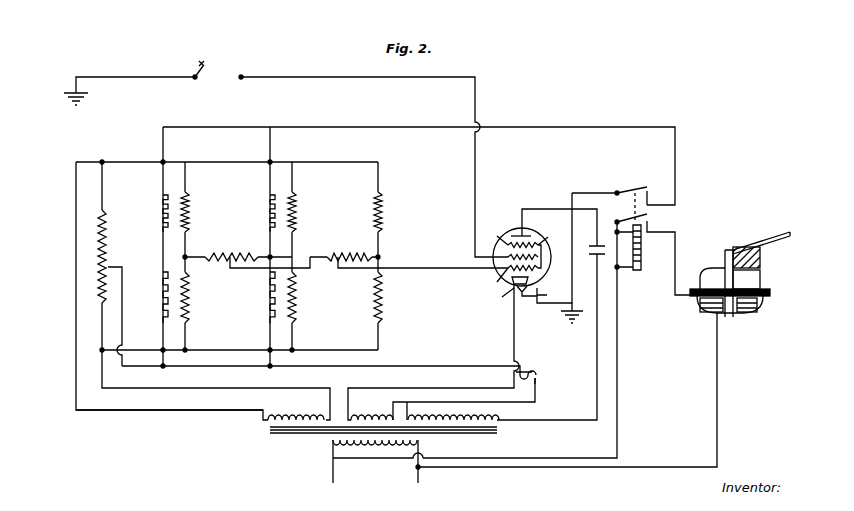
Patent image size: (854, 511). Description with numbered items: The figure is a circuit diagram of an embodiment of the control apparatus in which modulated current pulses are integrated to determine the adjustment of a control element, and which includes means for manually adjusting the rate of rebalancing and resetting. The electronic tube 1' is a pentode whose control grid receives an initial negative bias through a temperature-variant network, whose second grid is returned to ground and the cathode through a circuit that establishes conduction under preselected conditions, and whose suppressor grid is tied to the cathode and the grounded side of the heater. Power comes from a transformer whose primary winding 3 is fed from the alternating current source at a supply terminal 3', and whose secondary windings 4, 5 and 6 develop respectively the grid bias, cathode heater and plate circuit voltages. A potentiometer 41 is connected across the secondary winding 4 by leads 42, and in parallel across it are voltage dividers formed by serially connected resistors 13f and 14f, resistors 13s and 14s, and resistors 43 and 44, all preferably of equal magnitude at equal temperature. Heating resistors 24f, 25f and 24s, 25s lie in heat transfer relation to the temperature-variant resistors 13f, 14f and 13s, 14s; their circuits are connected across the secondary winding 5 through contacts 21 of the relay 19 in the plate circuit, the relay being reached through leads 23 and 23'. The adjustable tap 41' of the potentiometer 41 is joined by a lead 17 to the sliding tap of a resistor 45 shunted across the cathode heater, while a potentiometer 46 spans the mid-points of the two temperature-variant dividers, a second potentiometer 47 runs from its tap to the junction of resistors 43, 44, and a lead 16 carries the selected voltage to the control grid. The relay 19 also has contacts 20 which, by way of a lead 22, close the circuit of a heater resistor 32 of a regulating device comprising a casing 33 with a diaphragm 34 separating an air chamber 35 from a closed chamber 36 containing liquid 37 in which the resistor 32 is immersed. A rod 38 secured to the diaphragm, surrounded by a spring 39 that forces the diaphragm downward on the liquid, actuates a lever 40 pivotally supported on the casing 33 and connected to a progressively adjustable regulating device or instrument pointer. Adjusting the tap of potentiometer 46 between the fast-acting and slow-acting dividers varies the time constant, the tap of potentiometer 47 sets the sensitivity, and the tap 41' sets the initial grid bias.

The electronic tube 1' is at (519, 255).
The primary winding 3 is at (390, 445).
The supply terminal 3' is at (238, 70).
The secondary winding 4 is at (298, 408).
The secondary winding 5 is at (372, 408).
The secondary winding 6 is at (497, 423).
The resistor 13f is at (189, 215).
The resistor 13s is at (296, 215).
The resistor 14f is at (189, 306).
The resistor 14s is at (296, 306).
The grid lead 16 is at (423, 259).
The lead 17 is at (458, 366).
The relay 19 is at (641, 261).
The contacts 20 is at (656, 222).
The contacts 21 is at (651, 196).
The lead 22 is at (619, 441).
The lead 23 is at (595, 184).
The lead 23' is at (419, 153).
The heating resistor 24f is at (163, 214).
The heating resistor 24s is at (270, 218).
The heating resistor 25f is at (163, 313).
The heating resistor 25s is at (270, 307).
The heater resistor 32 is at (712, 313).
The casing 33 is at (695, 297).
The diaphragm 34 is at (760, 280).
The air chamber 35 is at (760, 258).
The closed chamber 36 is at (745, 313).
The liquid 37 is at (757, 305).
The rod 38 is at (733, 250).
The spring 39 is at (722, 276).
The lever 40 is at (791, 232).
The potentiometer 41 is at (114, 256).
The adjustable tap 41' is at (128, 305).
The leads 42 is at (217, 410).
The resistor 43 is at (382, 215).
The resistor 44 is at (382, 300).
The resistor 45 is at (537, 382).
The potentiometer 46 is at (231, 248).
The potentiometer 47 is at (349, 248).